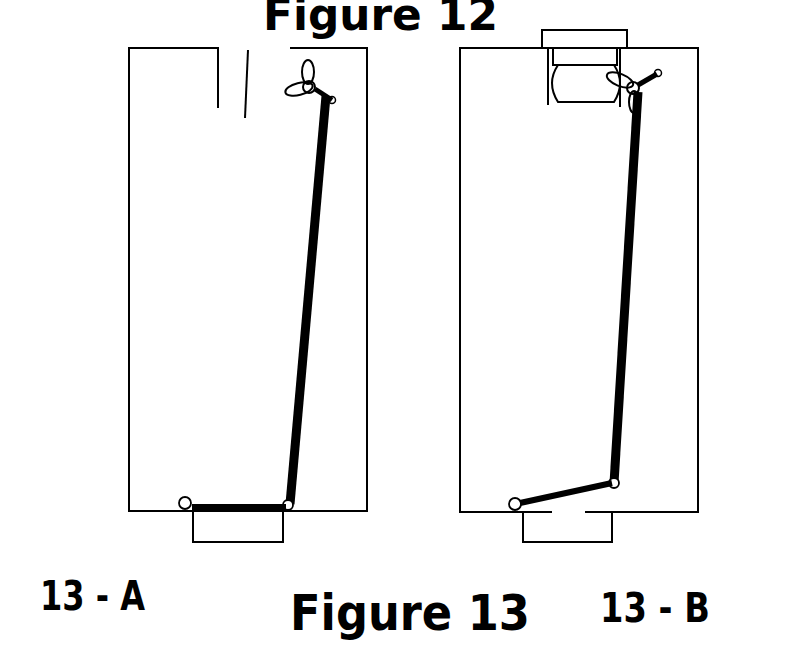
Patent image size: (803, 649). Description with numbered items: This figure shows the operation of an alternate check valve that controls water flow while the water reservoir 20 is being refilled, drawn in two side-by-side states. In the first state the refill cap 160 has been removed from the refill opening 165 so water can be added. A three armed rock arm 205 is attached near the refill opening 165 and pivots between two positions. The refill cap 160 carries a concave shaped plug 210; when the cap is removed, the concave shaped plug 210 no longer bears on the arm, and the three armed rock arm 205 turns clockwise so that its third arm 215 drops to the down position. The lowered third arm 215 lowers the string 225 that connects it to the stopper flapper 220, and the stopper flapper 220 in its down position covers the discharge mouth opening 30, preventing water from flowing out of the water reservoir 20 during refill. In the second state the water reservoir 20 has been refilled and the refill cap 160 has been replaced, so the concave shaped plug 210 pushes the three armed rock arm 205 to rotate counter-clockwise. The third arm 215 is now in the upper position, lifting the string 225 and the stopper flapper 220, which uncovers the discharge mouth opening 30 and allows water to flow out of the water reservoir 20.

The water reservoir 20 is at (367, 215).
The discharge mouth opening 30 is at (240, 515).
The refill cap 160 is at (627, 31).
The refill opening 165 is at (215, 108).
The three armed rock arm 205 is at (306, 100).
The concave shaped plug 210 is at (548, 93).
The third arm 215 is at (335, 101).
The stopper flapper 220 is at (247, 502).
The string 225 is at (297, 385).